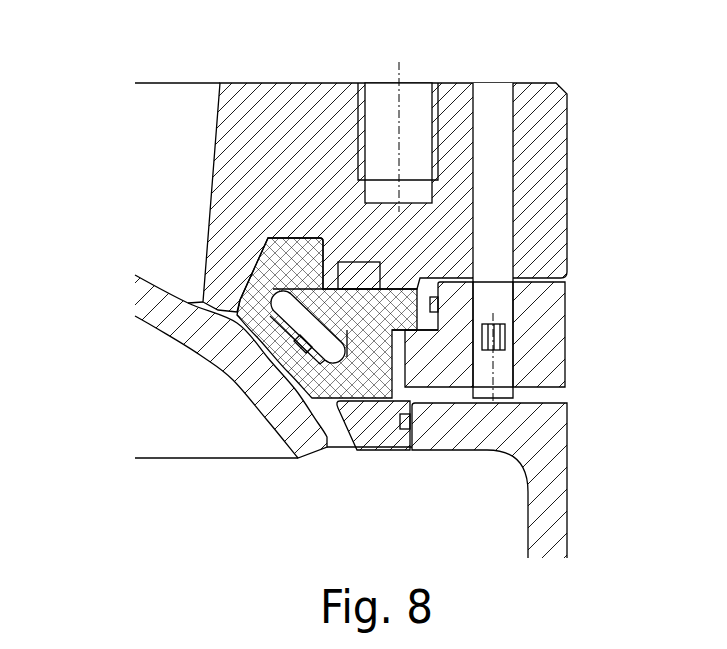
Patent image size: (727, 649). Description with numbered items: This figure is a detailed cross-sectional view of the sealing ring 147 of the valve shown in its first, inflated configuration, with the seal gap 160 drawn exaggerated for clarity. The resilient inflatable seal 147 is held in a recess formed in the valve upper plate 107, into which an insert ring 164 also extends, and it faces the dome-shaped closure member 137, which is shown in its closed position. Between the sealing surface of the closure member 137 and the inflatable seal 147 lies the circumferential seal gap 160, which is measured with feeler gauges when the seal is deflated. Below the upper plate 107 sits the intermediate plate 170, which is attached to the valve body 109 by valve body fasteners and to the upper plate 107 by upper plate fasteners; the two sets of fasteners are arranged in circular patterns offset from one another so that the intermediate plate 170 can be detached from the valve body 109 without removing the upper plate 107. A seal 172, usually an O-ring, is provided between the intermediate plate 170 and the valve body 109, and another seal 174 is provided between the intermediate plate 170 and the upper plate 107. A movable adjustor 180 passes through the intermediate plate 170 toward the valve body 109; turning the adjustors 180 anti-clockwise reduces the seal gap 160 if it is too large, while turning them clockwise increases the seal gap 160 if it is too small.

The valve upper plate 107 is at (554, 102).
The valve body 109 is at (538, 477).
The closure member 137 is at (165, 313).
The inflatable seal 147 is at (255, 262).
The seal gap 160 is at (265, 368).
The insert ring 164 is at (420, 266).
The intermediate plate 170 is at (545, 298).
The seal 172 is at (410, 423).
The seal 174 is at (443, 303).
The adjustor 180 is at (492, 316).